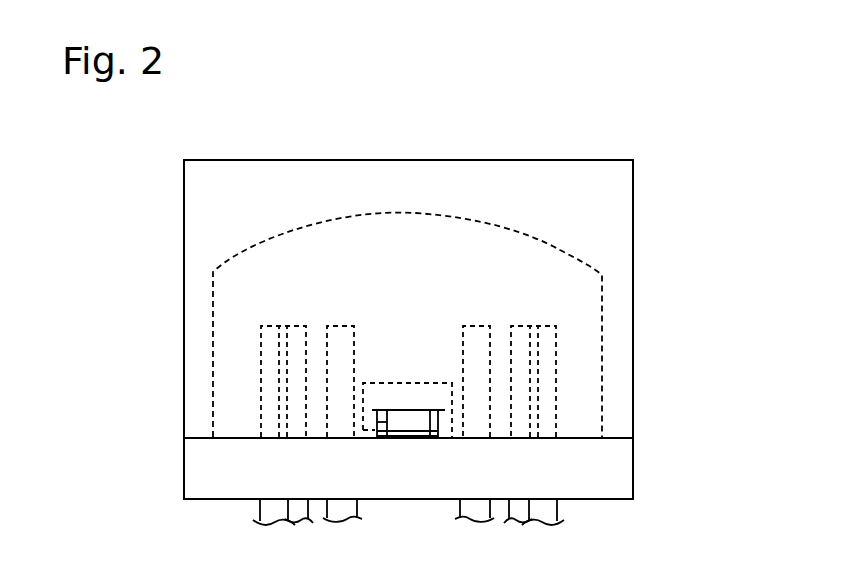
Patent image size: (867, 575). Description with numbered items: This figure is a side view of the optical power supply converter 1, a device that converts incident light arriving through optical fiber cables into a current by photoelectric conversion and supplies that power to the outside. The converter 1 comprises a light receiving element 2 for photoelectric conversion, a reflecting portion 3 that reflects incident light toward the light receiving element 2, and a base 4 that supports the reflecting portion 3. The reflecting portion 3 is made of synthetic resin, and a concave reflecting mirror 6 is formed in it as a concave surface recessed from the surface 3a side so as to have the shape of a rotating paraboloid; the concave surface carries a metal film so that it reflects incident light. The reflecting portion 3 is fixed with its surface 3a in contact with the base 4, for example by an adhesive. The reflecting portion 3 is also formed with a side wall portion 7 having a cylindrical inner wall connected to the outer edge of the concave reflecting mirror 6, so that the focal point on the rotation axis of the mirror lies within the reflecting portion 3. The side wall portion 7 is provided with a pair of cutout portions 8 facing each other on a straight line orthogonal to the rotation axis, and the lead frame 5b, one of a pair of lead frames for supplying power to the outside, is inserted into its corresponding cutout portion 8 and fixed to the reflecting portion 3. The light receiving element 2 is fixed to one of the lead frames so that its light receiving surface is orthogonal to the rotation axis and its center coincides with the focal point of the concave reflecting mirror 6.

The optical power supply converter 1 is at (163, 163).
The light receiving element 2 is at (363, 394).
The reflecting portion 3 is at (238, 160).
The surface 3a is at (608, 438).
The base 4 is at (183, 463).
The lead frame 5b is at (412, 432).
The concave reflecting mirror 6 is at (560, 250).
The side wall portion 7 is at (633, 355).
The cutout portion 8 is at (387, 422).